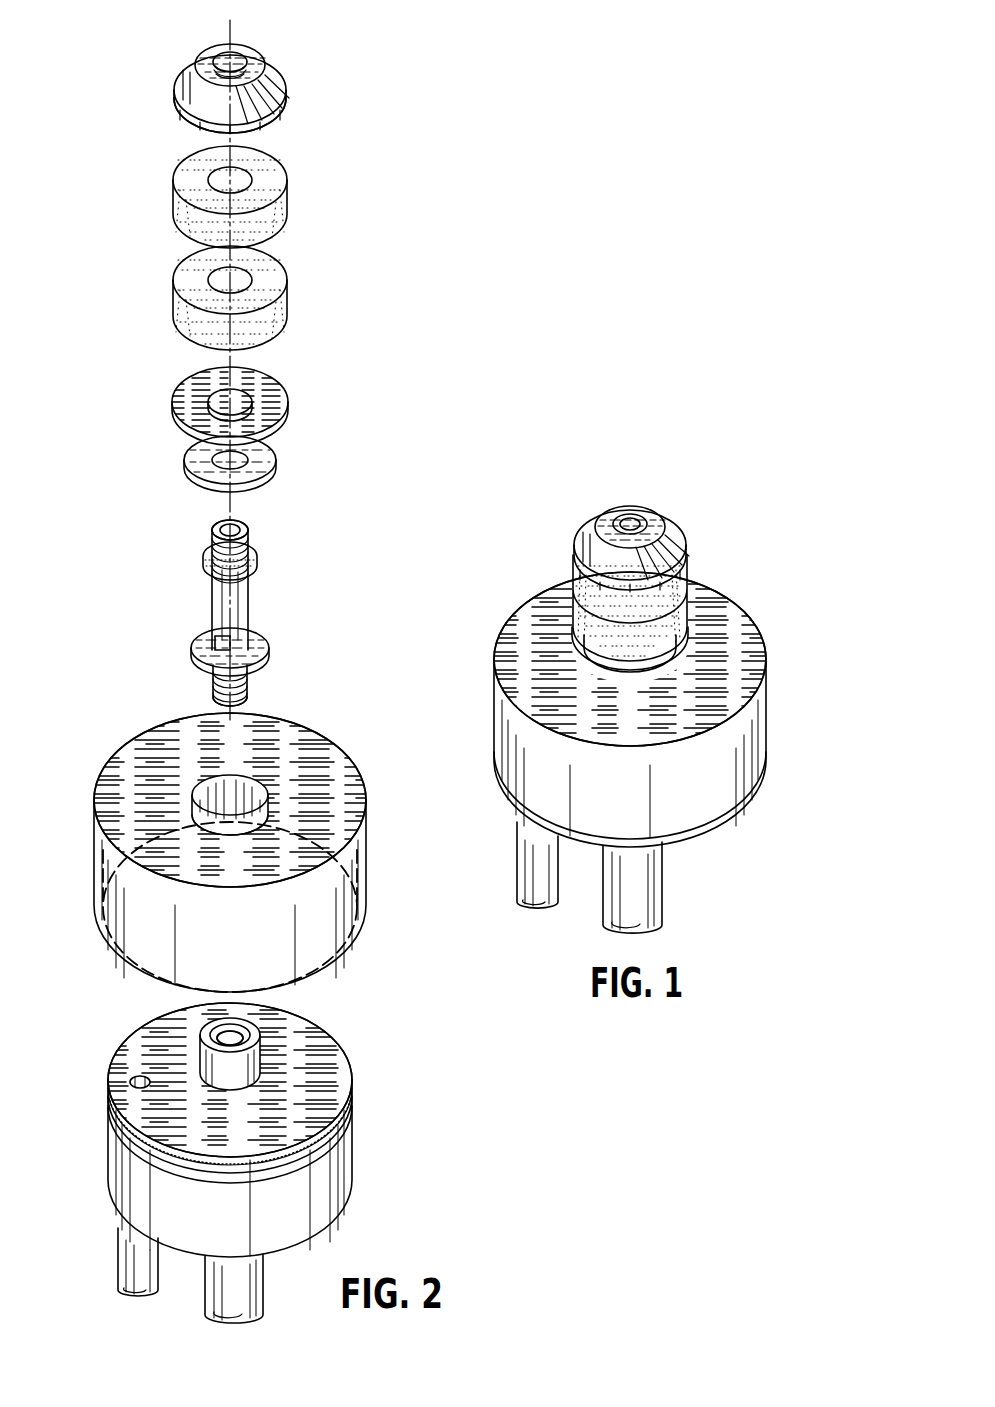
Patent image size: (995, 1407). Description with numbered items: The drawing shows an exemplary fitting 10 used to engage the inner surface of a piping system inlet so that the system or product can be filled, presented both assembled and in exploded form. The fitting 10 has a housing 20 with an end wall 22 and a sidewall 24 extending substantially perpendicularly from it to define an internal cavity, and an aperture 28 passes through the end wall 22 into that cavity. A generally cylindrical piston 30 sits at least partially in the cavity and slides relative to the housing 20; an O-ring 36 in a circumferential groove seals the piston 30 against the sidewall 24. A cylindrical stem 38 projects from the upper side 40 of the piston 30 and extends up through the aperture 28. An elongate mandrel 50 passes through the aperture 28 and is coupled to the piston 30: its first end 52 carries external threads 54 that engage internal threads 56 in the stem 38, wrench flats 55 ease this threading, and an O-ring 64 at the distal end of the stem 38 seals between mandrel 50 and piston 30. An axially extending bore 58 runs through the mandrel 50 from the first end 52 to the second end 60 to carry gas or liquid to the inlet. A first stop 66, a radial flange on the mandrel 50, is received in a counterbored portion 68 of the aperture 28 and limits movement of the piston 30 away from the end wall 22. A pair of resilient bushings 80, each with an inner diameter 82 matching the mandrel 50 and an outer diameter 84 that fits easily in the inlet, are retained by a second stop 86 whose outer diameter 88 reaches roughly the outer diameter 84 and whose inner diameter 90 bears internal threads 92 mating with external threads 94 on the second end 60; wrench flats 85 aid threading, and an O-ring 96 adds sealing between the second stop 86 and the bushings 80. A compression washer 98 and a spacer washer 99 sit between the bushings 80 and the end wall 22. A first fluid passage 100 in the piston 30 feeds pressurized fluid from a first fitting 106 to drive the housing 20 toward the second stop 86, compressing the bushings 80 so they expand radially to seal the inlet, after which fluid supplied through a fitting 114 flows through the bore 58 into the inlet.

In FIG. 2, the fitting 10 is at (417, 118).
In FIG. 1, the fitting 10 is at (757, 524).
In FIG. 2, the housing 20 is at (257, 845).
In FIG. 1, the housing 20 is at (656, 694).
In FIG. 2, the end wall 22 is at (316, 748).
In FIG. 1, the end wall 22 is at (726, 604).
In FIG. 2, the sidewall 24 is at (234, 944).
In FIG. 1, the sidewall 24 is at (622, 804).
In FIG. 2, the aperture 28 is at (256, 790).
In FIG. 2, the piston 30 is at (233, 1150).
In FIG. 1, the piston 30 is at (608, 842).
In FIG. 2, the O-ring 36 is at (202, 1185).
In FIG. 2, the stem 38 is at (258, 1028).
In FIG. 2, the upper side 40 is at (134, 1048).
In FIG. 2, the mandrel 50 is at (230, 600).
In FIG. 2, the first end 52 is at (218, 700).
In FIG. 2, the external threads 54 is at (212, 684).
In FIG. 2, the wrench flats 55 is at (232, 652).
In FIG. 2, the internal threads 56 is at (222, 1030).
In FIG. 2, the axially extending bore 58 is at (222, 526).
In FIG. 1, the axially extending bore 58 is at (626, 518).
In FIG. 2, the second end 60 is at (242, 524).
In FIG. 1, the second end 60 is at (638, 514).
In FIG. 2, the O-ring 64 is at (234, 1044).
In FIG. 2, the first stop 66 is at (200, 638).
In FIG. 2, the counterbored portion 68 is at (228, 784).
In FIG. 2, the resilient bushings 80 is at (225, 240).
In FIG. 1, the resilient bushings 80 is at (576, 612).
In FIG. 2, the inner diameter 82 is at (248, 176).
In FIG. 2, the outer diameter 84 is at (178, 224).
In FIG. 2, the wrench flats 85 is at (196, 74).
In FIG. 1, the wrench flats 85 is at (674, 532).
In FIG. 2, the second stop 86 is at (280, 76).
In FIG. 1, the second stop 86 is at (582, 540).
In FIG. 2, the outer diameter 88 is at (180, 112).
In FIG. 2, the inner diameter 90 is at (250, 48).
In FIG. 2, the internal threads 92 is at (222, 54).
In FIG. 2, the external threads 94 is at (250, 546).
In FIG. 2, the O-ring 96 is at (206, 566).
In FIG. 2, the compression washer 98 is at (190, 384).
In FIG. 1, the compression washer 98 is at (588, 658).
In FIG. 2, the spacer washer 99 is at (190, 468).
In FIG. 1, the spacer washer 99 is at (626, 674).
In FIG. 2, the first fluid passage 100 is at (132, 1076).
In FIG. 2, the first fitting 106 is at (118, 1264).
In FIG. 1, the first fitting 106 is at (516, 856).
In FIG. 2, the fitting 114 is at (264, 1290).
In FIG. 1, the fitting 114 is at (664, 894).